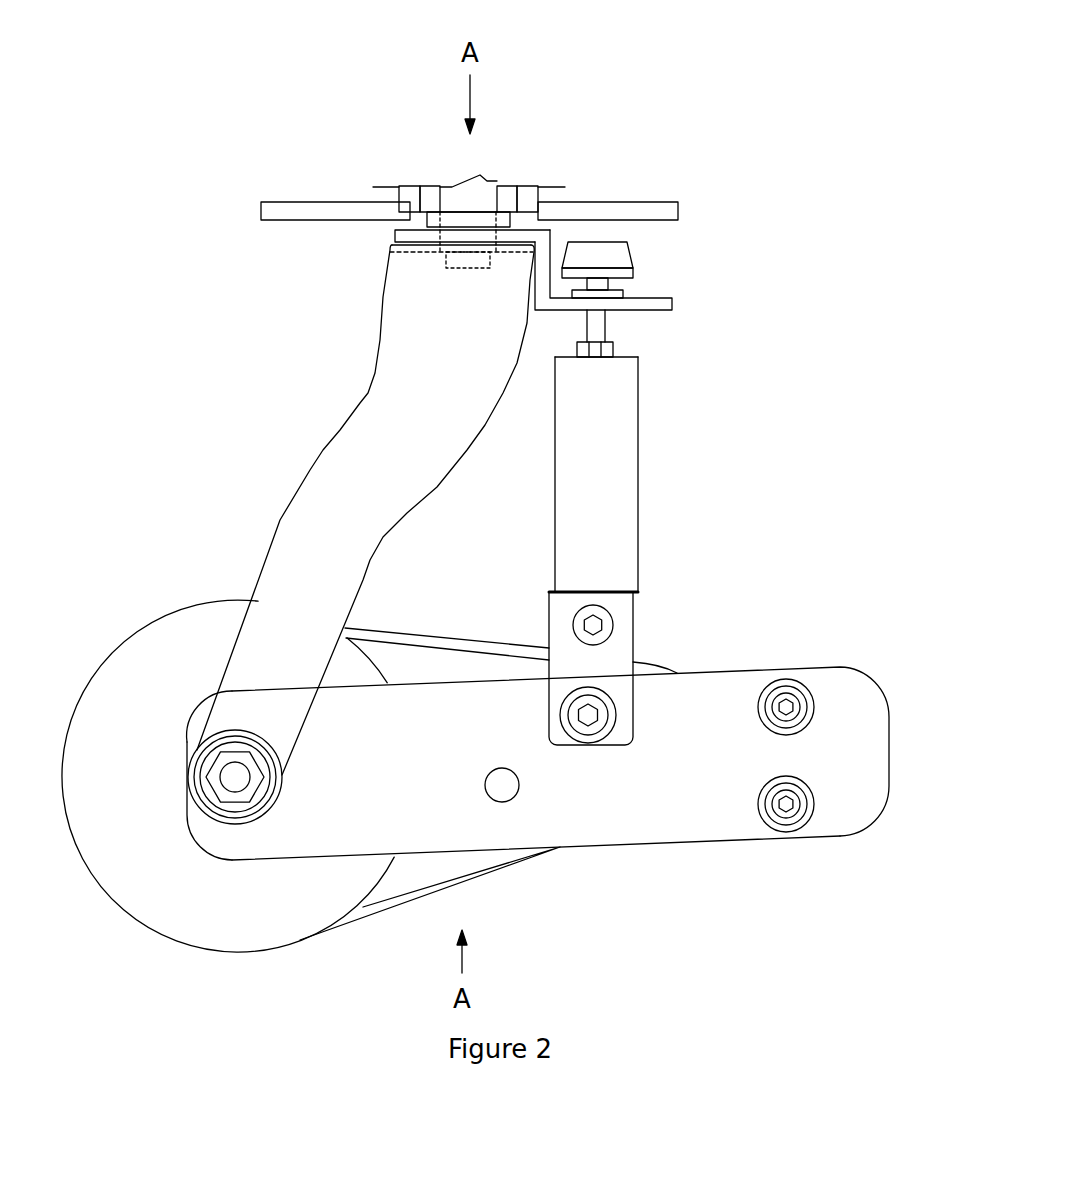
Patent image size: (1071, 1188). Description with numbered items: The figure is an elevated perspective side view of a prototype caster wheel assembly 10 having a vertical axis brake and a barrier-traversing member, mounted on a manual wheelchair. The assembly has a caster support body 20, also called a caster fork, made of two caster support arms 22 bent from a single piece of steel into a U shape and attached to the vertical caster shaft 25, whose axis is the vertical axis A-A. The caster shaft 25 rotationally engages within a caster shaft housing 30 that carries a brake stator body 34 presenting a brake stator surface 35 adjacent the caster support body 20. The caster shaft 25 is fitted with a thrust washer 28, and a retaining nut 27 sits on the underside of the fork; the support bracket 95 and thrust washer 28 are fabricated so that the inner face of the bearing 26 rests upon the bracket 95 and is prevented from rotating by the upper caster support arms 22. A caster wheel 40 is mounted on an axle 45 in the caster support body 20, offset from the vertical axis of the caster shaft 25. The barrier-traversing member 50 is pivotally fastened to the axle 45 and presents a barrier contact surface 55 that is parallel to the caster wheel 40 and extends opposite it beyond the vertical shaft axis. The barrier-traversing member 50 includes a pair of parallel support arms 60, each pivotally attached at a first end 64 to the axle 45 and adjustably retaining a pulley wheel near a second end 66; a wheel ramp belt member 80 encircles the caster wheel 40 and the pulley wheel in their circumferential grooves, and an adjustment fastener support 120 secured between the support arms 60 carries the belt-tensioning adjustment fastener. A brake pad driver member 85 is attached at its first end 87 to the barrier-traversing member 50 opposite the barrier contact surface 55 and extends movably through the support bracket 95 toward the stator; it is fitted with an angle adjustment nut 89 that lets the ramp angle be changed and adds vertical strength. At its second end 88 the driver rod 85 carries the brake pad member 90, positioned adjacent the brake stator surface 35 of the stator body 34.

The caster wheel assembly 10 is at (782, 87).
The caster support body 20 is at (312, 366).
The caster support arms 22 is at (335, 550).
The caster shaft 25 is at (467, 207).
The bearing 26 is at (433, 195).
The retaining nut 27 is at (450, 267).
The thrust washer 28 is at (510, 223).
The caster shaft housing 30 is at (408, 198).
The brake stator body 34 is at (320, 208).
The brake stator surface 35 is at (310, 223).
The caster wheel 40 is at (200, 623).
The axle 45 is at (233, 773).
The barrier-traversing member 50 is at (729, 862).
The barrier contact surface 55 is at (523, 862).
The support arms 60 is at (650, 830).
The first end 64 is at (305, 825).
The second end 66 is at (745, 693).
The wheel ramp belt member 80 is at (430, 637).
The brake pad driver member 85 is at (615, 482).
The first end 87 is at (605, 663).
The second end 88 is at (607, 380).
The angle adjustment nut 89 is at (620, 352).
The brake pad member 90 is at (613, 252).
The support bracket 95 is at (677, 306).
The adjustment fastener support 120 is at (790, 705).